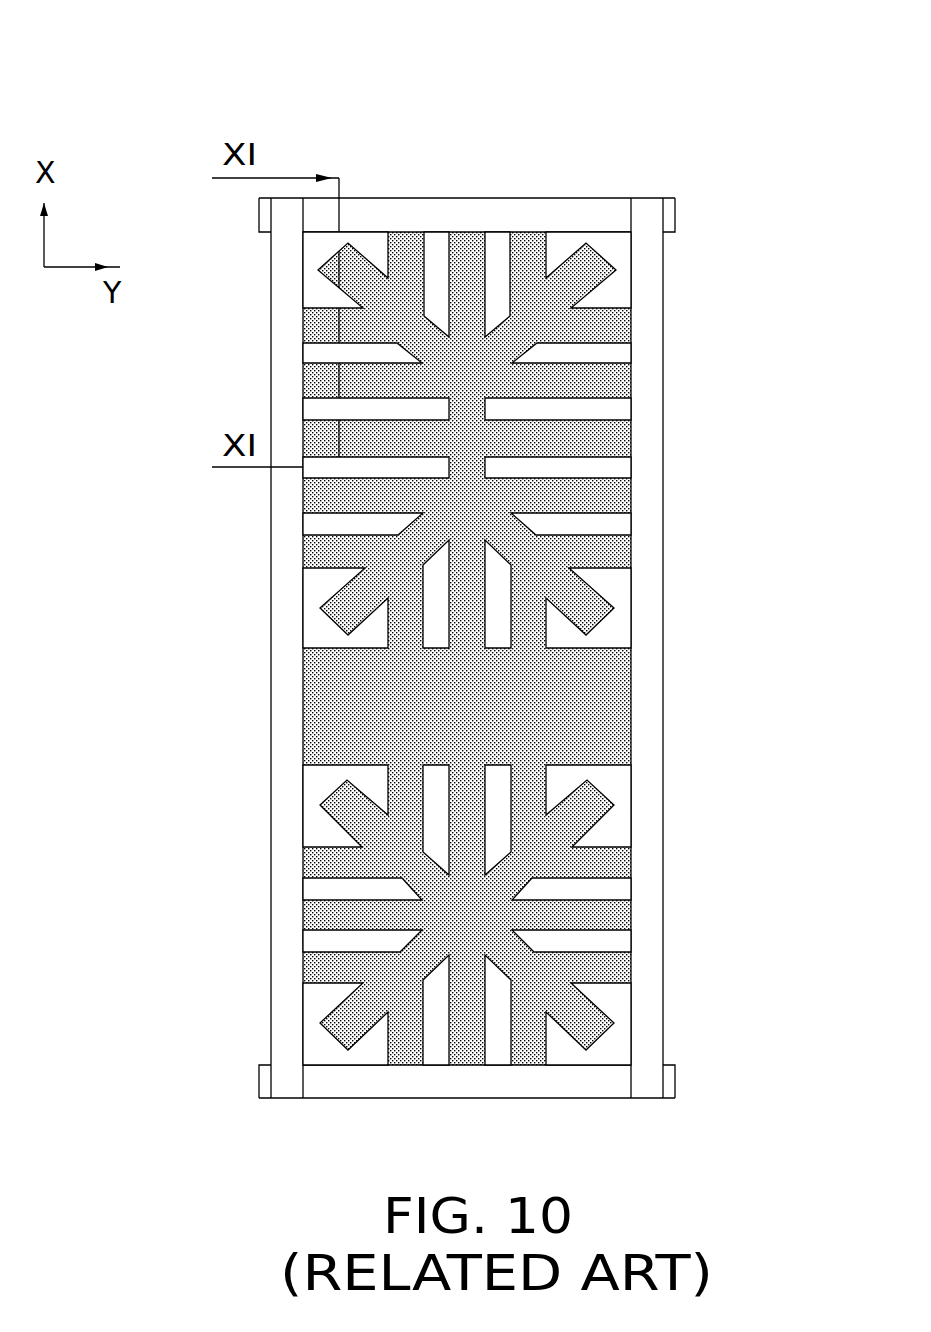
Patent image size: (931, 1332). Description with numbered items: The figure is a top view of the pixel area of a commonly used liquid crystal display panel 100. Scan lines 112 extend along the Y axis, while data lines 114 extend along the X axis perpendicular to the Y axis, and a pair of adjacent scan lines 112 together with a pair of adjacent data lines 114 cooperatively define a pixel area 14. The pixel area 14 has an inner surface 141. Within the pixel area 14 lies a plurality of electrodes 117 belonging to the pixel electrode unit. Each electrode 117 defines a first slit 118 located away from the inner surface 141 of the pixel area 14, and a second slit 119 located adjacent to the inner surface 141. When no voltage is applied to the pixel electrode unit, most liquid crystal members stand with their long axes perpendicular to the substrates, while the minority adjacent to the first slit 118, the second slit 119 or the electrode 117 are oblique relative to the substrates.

The display panel 100 is at (425, 78).
The scan line 112 is at (530, 210).
The data line 114 is at (643, 538).
The inner surface 141 is at (632, 827).
The pixel area 14 is at (605, 720).
The electrode 117 is at (345, 694).
The first slit 118 is at (500, 616).
The second slit 119 is at (612, 407).